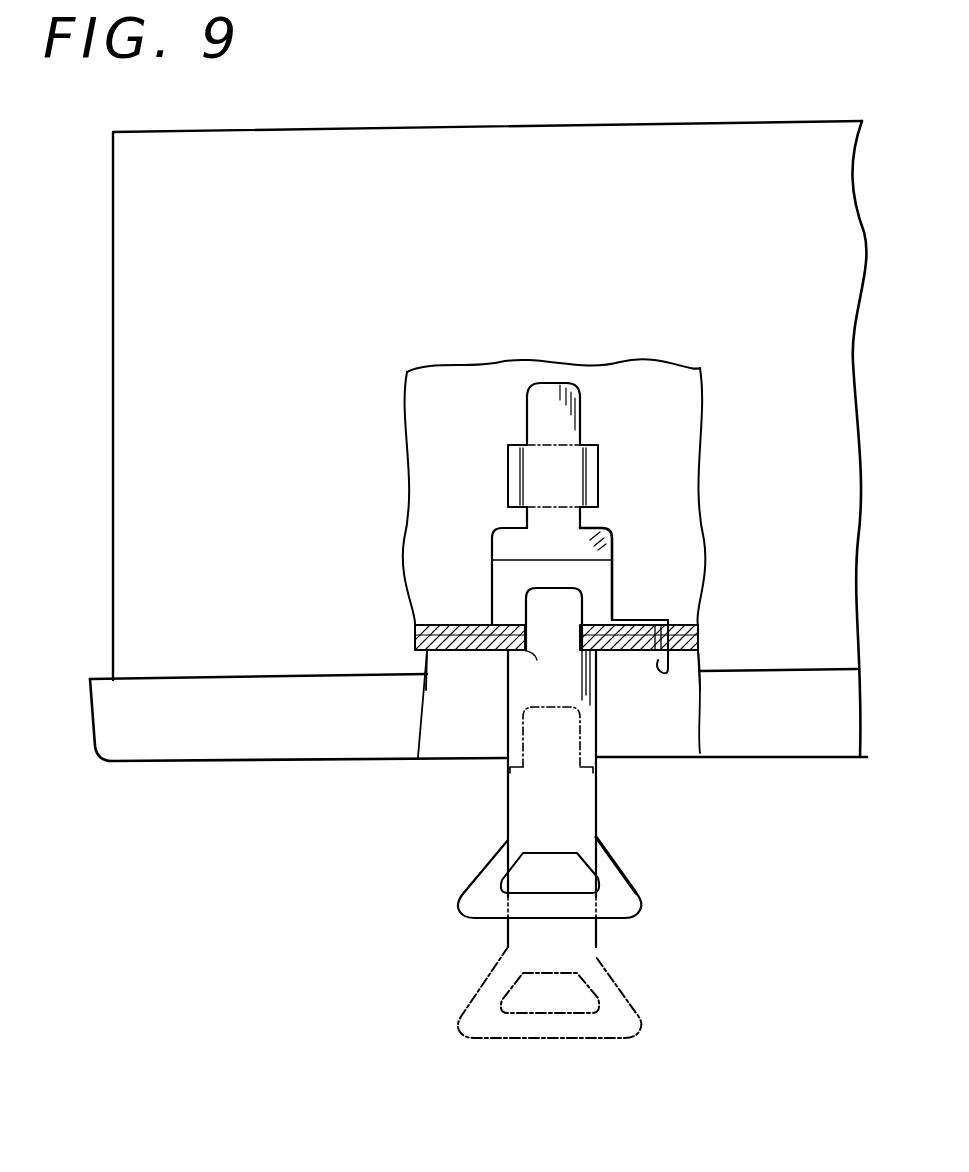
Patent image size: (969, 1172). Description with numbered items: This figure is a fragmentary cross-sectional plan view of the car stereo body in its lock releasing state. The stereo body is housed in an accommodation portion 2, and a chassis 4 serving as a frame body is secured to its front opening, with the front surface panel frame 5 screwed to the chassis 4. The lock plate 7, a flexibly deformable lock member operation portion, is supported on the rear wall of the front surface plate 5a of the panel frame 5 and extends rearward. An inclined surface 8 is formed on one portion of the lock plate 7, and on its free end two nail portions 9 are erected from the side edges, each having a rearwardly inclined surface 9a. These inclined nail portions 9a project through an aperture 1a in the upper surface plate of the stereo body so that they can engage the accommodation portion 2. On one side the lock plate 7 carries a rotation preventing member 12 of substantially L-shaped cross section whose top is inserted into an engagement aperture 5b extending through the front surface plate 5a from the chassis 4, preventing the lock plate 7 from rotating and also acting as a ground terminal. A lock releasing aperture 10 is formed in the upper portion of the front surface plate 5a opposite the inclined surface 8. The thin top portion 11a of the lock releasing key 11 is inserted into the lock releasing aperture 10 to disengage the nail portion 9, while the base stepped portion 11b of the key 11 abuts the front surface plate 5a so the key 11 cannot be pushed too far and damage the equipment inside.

The aperture 1a is at (508, 447).
The accommodation portion 2 is at (143, 249).
The chassis 4 is at (413, 640).
The front surface panel frame 5 is at (218, 745).
The front surface plate 5a is at (414, 653).
The engagement aperture 5b is at (657, 662).
The lock plate 7 is at (587, 543).
The inclined surface 8 is at (508, 587).
The nail portion 9 is at (588, 468).
The rearwardly inclined surface 9a is at (585, 452).
The lock releasing aperture 10 is at (506, 655).
The lock releasing key 11 is at (580, 807).
The thin top portion 11a is at (562, 603).
The base stepped portion 11b is at (483, 652).
The rotation preventing member 12 is at (667, 620).